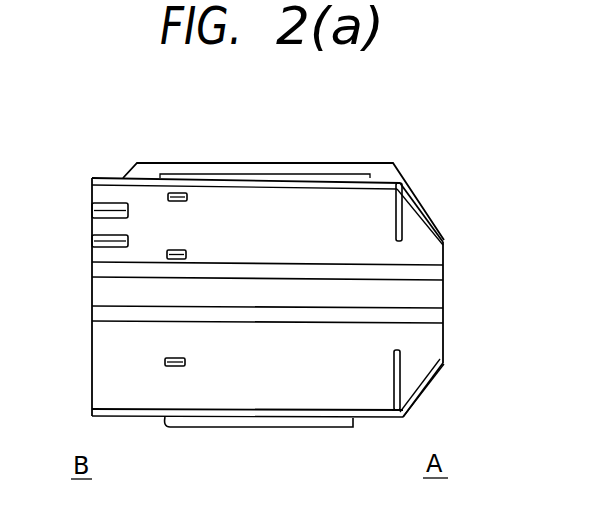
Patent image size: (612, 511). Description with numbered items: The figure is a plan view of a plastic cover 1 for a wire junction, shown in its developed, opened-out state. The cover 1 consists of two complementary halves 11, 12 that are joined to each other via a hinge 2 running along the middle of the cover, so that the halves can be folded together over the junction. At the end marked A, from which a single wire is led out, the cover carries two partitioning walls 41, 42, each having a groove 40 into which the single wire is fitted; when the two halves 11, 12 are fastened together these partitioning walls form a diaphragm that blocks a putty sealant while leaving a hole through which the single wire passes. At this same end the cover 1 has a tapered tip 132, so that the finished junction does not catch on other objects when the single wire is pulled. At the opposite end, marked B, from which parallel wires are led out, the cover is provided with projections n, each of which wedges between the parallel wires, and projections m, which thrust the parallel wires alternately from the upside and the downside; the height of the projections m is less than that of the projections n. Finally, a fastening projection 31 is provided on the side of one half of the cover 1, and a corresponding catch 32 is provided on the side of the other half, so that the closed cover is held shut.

The cover 1 is at (510, 200).
The complementary half of cover 11 is at (430, 236).
The hinge 2 is at (445, 291).
The complementary half of cover 12 is at (445, 338).
The fastening projection 31 is at (275, 163).
The catch 32 is at (250, 420).
The partitioning wall 41 is at (403, 215).
The groove 40 is at (412, 340).
The tapered tip 132 is at (408, 205).
The partitioning wall 42 is at (402, 385).
The projections m is at (177, 192).
The projections n is at (97, 208).